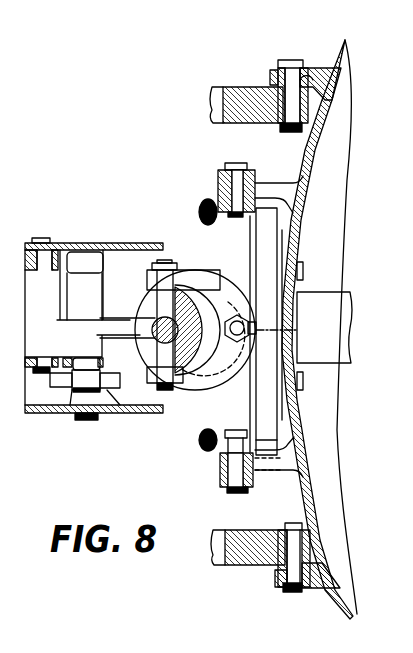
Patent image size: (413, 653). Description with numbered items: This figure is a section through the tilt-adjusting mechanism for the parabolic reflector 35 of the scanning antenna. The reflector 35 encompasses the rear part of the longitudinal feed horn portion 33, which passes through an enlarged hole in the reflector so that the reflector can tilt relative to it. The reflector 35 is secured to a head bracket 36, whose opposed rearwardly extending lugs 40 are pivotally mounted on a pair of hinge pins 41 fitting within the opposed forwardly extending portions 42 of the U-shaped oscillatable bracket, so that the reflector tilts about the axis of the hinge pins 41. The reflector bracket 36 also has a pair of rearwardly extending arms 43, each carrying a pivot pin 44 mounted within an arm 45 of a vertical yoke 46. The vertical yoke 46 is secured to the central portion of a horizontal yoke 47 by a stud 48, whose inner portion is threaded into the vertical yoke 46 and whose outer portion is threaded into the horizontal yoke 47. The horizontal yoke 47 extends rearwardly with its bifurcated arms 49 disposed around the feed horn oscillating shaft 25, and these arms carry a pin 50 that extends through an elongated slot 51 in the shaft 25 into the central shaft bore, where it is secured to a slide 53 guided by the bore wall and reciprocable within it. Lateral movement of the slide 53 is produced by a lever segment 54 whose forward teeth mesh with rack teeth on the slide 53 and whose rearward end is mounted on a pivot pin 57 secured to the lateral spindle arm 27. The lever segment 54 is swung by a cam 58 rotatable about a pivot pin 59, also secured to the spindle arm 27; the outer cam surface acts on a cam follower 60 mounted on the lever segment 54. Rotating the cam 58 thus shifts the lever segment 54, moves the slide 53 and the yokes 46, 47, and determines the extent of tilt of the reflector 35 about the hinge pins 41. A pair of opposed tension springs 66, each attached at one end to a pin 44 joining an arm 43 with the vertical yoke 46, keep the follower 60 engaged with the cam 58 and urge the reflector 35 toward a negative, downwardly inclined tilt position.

The oscillating shaft 25 is at (130, 316).
The lateral spindle arm 27 is at (144, 230).
The longitudinal feed horn portion 33 is at (340, 313).
The reflector 35 is at (340, 437).
The head bracket 36 is at (303, 431).
The lugs 40 is at (318, 80).
The hinge pins 41 is at (293, 62).
The forwardly extending portions 42 is at (250, 78).
The arms 43 is at (268, 183).
The pivot pin 44 is at (233, 166).
The arm 45 is at (220, 186).
The vertical yoke 46 is at (278, 250).
The horizontal yoke 47 is at (209, 374).
The stud 48 is at (238, 312).
The bifurcated arms 49 is at (183, 279).
The pin 50 is at (163, 268).
The elongated slot 51 is at (172, 392).
The slide 53 is at (149, 343).
The lever segment 54 is at (108, 324).
The pivot pin 57 is at (50, 238).
The cam 58 is at (123, 396).
The pivot pin 59 is at (91, 420).
The cam follower 60 is at (66, 388).
The tension springs 66 is at (200, 212).